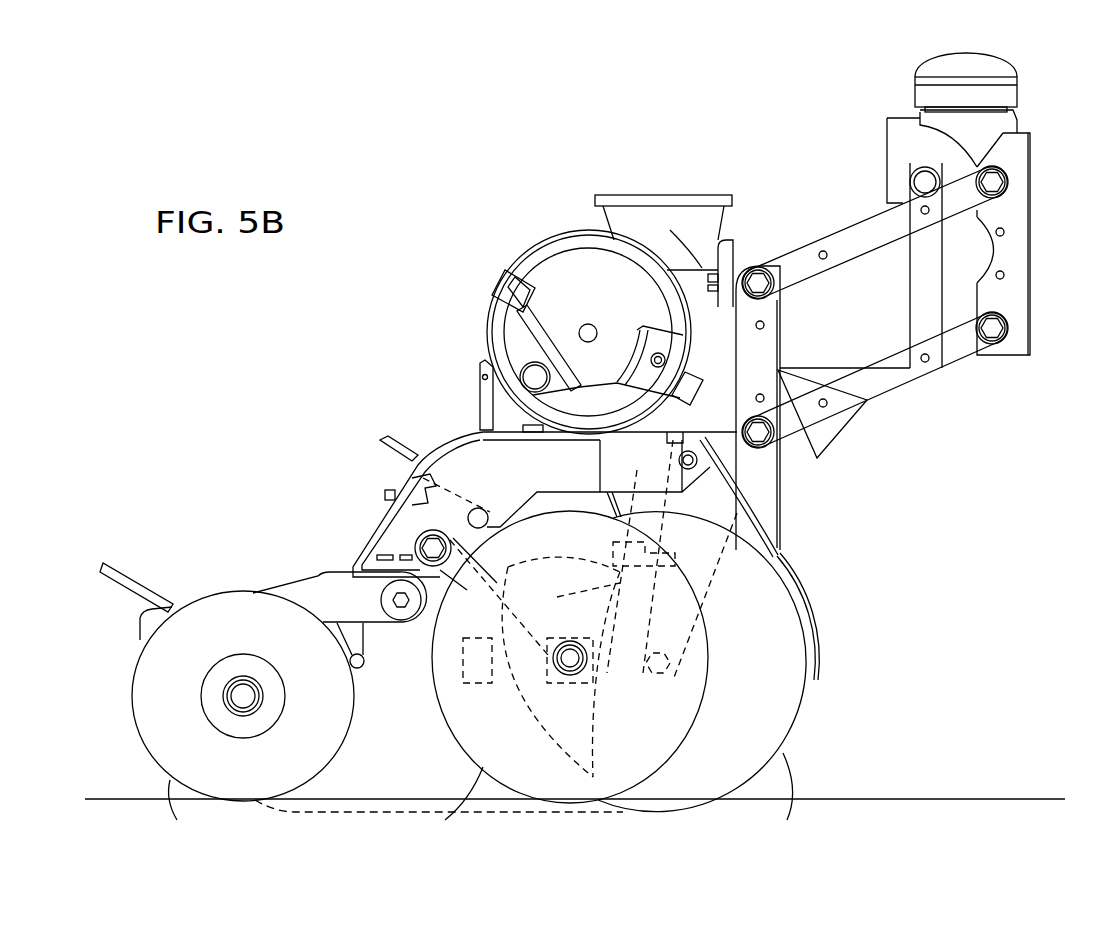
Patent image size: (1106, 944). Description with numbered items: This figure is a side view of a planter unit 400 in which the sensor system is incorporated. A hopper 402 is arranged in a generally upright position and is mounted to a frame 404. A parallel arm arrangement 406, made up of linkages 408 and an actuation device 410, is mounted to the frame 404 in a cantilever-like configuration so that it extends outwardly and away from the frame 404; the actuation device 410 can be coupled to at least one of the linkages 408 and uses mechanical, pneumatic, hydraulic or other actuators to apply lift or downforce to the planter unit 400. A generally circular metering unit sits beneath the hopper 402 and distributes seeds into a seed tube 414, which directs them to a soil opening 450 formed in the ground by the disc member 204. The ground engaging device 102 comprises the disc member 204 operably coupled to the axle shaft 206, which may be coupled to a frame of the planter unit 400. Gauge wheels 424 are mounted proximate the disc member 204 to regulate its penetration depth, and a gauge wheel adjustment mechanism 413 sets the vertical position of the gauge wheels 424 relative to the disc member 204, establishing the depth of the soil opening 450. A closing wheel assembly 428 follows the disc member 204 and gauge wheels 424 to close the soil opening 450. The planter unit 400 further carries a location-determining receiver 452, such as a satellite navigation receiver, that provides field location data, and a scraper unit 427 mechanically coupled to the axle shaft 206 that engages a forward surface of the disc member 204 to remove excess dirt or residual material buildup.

The ground engaging device 102 is at (583, 803).
The disc member 204 is at (481, 800).
The axle shaft 206 is at (583, 688).
The planter unit 400 is at (605, 63).
The hopper 402 is at (663, 232).
The frame 404 is at (690, 258).
The parallel arm arrangement 406 is at (872, 358).
The linkages 408 is at (885, 367).
The actuation device 410 is at (887, 153).
The gauge wheel adjustment mechanism 413 is at (378, 512).
The seed tube 414 is at (650, 622).
The gauge wheels 424 is at (780, 750).
The scraper unit 427 is at (589, 584).
The closing wheel assembly 428 is at (176, 802).
The soil opening 450 is at (362, 803).
The location-determining receiver 452 is at (990, 63).